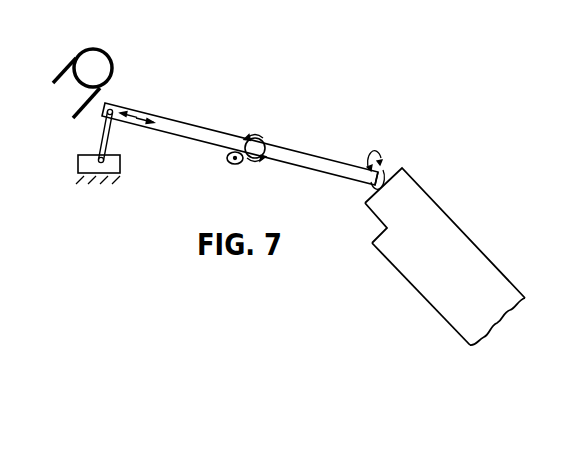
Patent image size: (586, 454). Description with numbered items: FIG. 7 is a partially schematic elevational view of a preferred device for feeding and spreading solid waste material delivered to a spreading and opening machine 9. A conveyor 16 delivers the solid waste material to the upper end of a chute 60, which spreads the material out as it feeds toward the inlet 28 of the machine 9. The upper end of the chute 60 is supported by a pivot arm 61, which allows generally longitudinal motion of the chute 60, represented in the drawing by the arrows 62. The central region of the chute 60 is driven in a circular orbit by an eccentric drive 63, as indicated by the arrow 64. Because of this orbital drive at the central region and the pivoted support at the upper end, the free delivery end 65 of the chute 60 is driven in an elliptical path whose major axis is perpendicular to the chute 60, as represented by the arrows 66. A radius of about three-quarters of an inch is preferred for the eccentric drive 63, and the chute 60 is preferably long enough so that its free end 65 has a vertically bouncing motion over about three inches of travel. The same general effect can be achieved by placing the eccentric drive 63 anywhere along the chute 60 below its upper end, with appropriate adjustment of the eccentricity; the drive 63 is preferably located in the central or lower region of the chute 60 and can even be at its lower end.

The spreading and opening machine 9 is at (438, 222).
The conveyor 16 is at (77, 57).
The inlet 28 is at (395, 170).
The chute 60 is at (313, 160).
The pivot arm 61 is at (105, 129).
The arrows 62 is at (134, 111).
The eccentric drive 63 is at (233, 165).
The arrow 64 is at (259, 139).
The free delivery end 65 is at (375, 188).
The arrows 66 is at (378, 160).